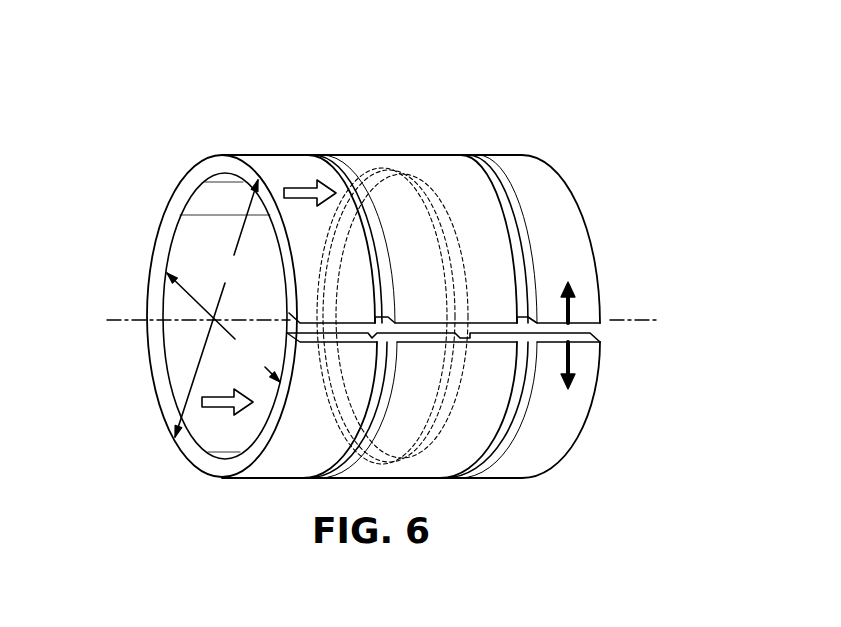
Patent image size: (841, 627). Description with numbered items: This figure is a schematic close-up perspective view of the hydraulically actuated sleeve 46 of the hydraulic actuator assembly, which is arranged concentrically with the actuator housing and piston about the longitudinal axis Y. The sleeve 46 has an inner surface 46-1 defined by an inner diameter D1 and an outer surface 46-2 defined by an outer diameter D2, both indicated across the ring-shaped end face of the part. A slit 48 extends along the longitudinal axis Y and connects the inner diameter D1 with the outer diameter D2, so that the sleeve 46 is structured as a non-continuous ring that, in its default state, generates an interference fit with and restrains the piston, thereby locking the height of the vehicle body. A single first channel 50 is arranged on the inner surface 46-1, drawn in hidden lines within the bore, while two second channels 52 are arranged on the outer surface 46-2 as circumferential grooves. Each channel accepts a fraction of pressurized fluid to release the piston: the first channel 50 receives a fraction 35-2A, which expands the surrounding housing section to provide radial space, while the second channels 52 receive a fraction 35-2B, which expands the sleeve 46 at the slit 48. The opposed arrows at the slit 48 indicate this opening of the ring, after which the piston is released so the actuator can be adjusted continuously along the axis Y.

The hydraulically actuated sleeve 46 is at (457, 136).
The inner surface 46-1 is at (173, 302).
The outer surface 46-2 is at (165, 230).
The slit 48 is at (606, 334).
The first channel 50 is at (444, 434).
The second channel 52 is at (336, 158).
The fraction of the second portion of pressurized fluid 35-2A is at (220, 408).
The fraction of the second portion of pressurized fluid 35-2B is at (300, 188).
The inner diameter D1 is at (223, 327).
The outer diameter D2 is at (216, 308).
The longitudinal axis Y is at (642, 320).